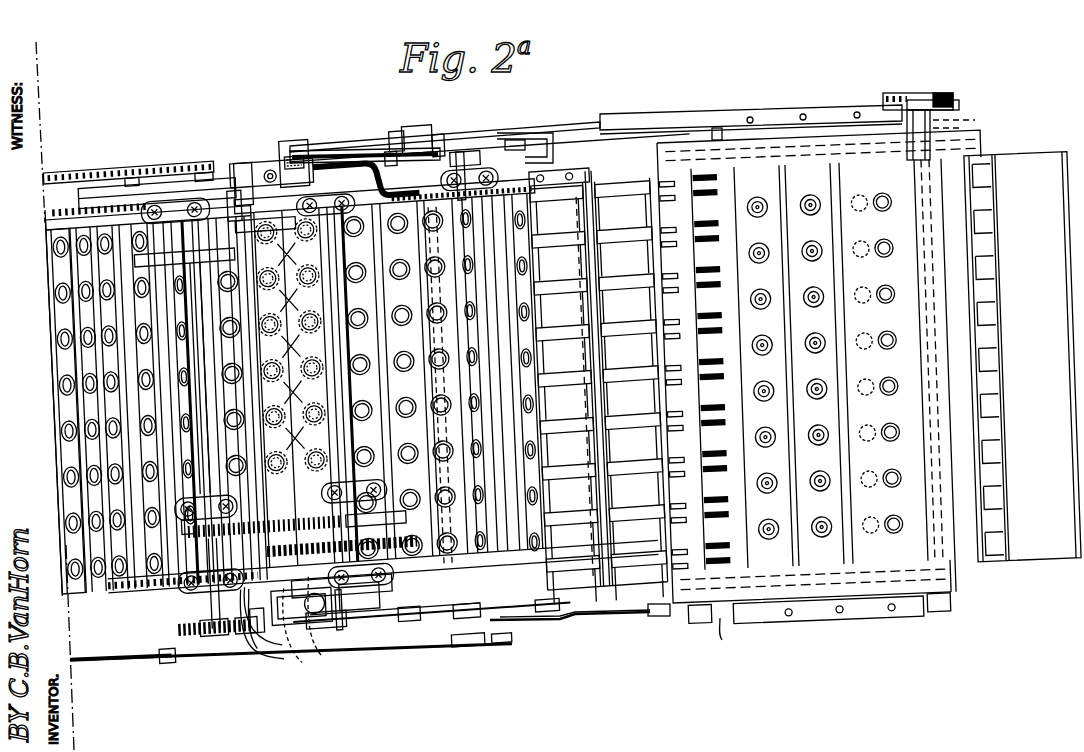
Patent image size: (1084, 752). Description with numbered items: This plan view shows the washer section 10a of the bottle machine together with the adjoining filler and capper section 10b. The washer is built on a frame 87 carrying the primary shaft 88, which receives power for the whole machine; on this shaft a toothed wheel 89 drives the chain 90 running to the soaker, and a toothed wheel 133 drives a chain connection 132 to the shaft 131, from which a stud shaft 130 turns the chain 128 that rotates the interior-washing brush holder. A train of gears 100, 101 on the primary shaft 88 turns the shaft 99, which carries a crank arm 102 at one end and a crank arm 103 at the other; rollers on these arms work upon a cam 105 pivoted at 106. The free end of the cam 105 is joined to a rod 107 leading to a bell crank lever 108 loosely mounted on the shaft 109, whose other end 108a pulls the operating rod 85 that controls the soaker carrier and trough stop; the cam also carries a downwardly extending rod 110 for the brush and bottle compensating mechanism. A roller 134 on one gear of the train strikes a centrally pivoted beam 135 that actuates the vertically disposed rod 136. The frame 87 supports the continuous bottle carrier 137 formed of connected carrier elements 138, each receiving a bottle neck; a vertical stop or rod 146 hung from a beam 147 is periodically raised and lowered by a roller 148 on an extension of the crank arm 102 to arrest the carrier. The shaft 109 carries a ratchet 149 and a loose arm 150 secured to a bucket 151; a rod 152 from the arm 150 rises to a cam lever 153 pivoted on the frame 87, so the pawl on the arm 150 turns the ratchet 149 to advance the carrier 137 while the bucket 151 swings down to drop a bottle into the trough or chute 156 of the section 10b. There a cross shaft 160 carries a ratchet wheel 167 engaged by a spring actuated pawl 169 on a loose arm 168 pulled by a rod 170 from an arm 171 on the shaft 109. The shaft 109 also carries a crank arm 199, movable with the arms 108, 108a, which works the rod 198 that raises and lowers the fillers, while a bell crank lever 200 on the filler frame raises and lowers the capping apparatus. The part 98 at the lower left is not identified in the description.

The washer section 10a is at (264, 169).
The filler and capper section 10b is at (912, 94).
The operating rod 85 is at (274, 622).
The frame 87 is at (280, 500).
The primary shaft 88 is at (196, 443).
The toothed wheel 89 is at (209, 166).
The chain 90 is at (127, 172).
The operating rod 98 is at (120, 647).
The shaft 99 is at (363, 504).
The gear 100 is at (278, 459).
The gear 101 is at (182, 526).
The crank arm 102 is at (354, 620).
The crank arm 103 is at (405, 179).
The cam 105 is at (265, 166).
The pivot 106 is at (242, 166).
The rod 107 is at (421, 157).
The bell crank lever 108 is at (452, 145).
The bell crank lever end 108a is at (498, 640).
The shaft 109 is at (471, 171).
The rod 110 is at (372, 150).
The chain 128 is at (276, 640).
The stud shaft 130 is at (302, 696).
The shaft 131 is at (238, 634).
The chain connection 132 is at (220, 638).
The toothed wheel 133 is at (194, 634).
The roller 134 is at (306, 150).
The beam 135 is at (366, 608).
The rod 136 is at (158, 170).
The bottle carrier 137 is at (440, 381).
The carrier element 138 is at (33, 361).
The stop rod 146 is at (255, 640).
The beam 147 is at (334, 635).
The roller 148 is at (369, 617).
The ratchet 149 is at (517, 140).
The arm 150 is at (442, 149).
The bucket 151 is at (585, 197).
The rod 152 is at (430, 137).
The cam lever 153 is at (320, 148).
The trough or chute 156 is at (598, 386).
The cross shaft 160 is at (937, 117).
The ratchet wheel 167 is at (933, 92).
The arm 168 is at (963, 110).
The pawl 169 is at (902, 90).
The rod 170 is at (763, 116).
The arm 171 is at (508, 135).
The rod 198 is at (588, 142).
The crank arm 199 is at (544, 607).
The bell crank lever 200 is at (709, 128).